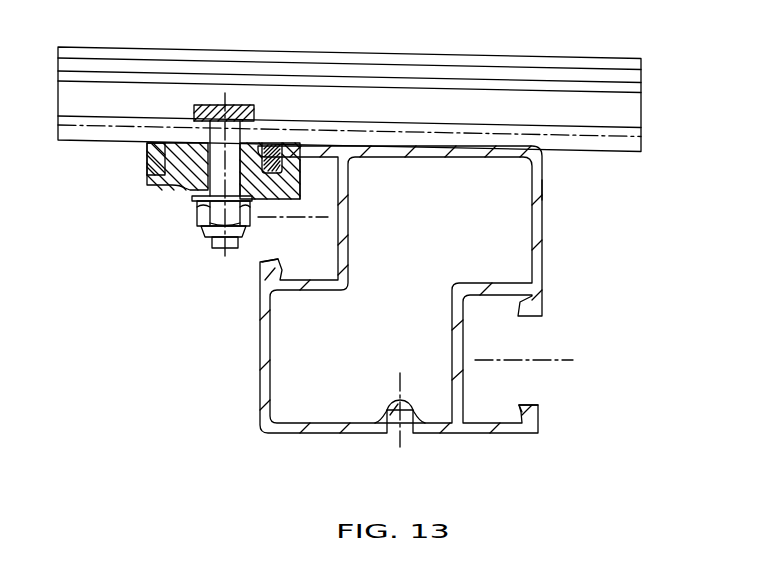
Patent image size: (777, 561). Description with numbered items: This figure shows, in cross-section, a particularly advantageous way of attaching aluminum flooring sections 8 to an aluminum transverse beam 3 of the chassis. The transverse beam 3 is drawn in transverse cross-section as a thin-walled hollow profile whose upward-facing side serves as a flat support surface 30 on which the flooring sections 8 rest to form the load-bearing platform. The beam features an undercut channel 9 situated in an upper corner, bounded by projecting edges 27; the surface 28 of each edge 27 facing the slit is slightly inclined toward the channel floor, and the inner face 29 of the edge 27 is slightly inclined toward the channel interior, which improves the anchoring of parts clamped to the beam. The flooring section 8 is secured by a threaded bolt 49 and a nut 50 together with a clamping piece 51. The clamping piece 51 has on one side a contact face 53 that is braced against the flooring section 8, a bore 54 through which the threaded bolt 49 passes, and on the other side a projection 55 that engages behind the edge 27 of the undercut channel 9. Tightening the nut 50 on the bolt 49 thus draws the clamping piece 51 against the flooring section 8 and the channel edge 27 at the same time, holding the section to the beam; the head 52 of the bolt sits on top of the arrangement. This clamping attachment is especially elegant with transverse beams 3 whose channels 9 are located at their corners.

The flooring section 8 is at (498, 47).
The flat support surface 30 is at (440, 149).
The transverse beam 3 is at (550, 187).
The undercut channel 9 is at (327, 275).
The inner face of edge 29 is at (522, 416).
The surface of edge facing slit 28 is at (527, 404).
The projecting edge 27 is at (290, 148).
The clamping piece 51 is at (168, 185).
The contact face 53 is at (170, 145).
The projection 55 is at (320, 179).
The bolt head 52 is at (257, 110).
The threaded bolt 49 is at (218, 135).
The bore 54 is at (207, 182).
The nut 50 is at (203, 210).